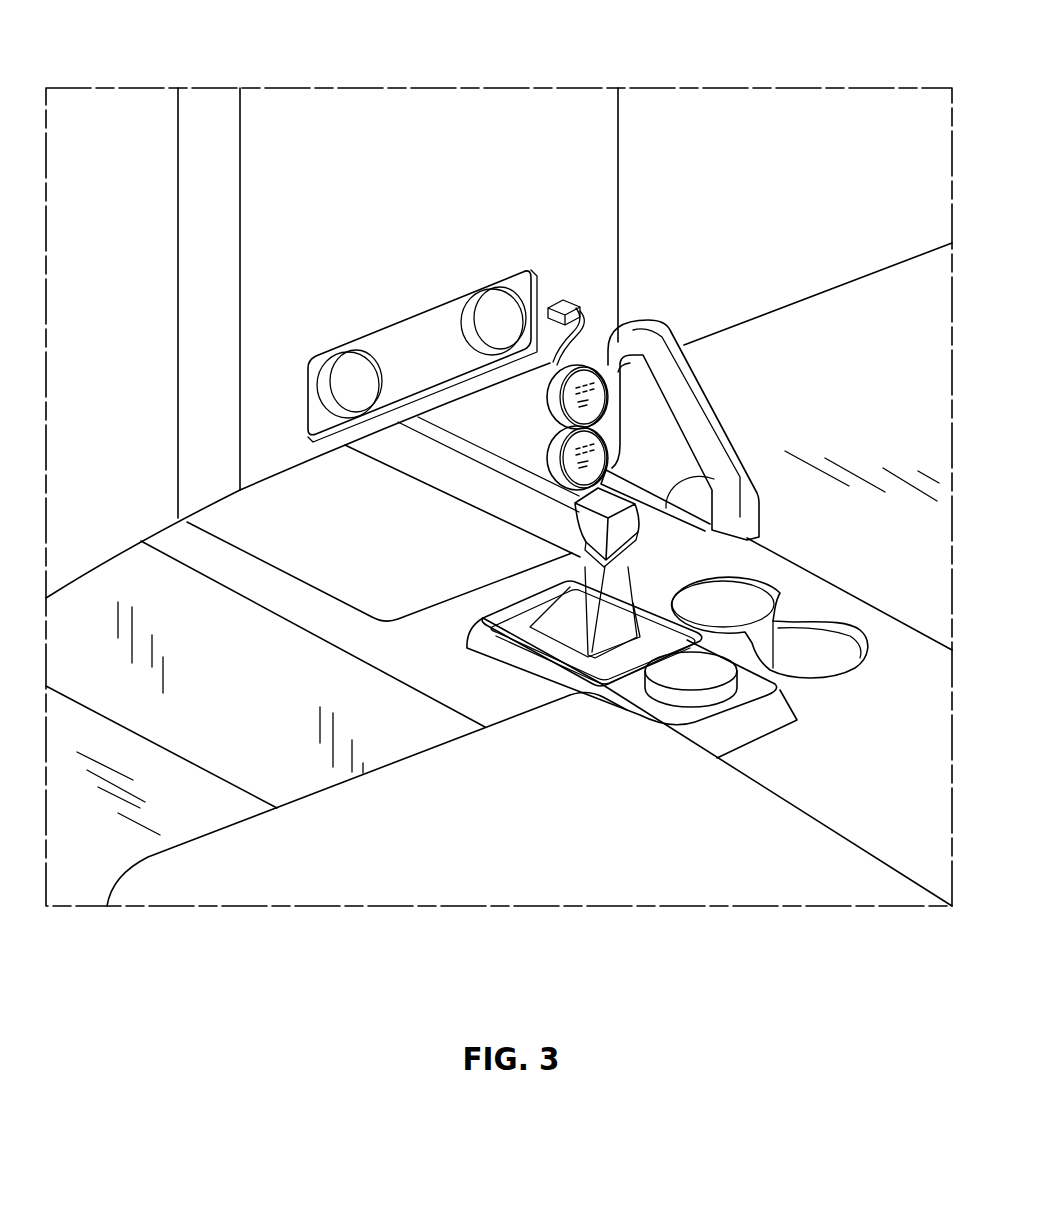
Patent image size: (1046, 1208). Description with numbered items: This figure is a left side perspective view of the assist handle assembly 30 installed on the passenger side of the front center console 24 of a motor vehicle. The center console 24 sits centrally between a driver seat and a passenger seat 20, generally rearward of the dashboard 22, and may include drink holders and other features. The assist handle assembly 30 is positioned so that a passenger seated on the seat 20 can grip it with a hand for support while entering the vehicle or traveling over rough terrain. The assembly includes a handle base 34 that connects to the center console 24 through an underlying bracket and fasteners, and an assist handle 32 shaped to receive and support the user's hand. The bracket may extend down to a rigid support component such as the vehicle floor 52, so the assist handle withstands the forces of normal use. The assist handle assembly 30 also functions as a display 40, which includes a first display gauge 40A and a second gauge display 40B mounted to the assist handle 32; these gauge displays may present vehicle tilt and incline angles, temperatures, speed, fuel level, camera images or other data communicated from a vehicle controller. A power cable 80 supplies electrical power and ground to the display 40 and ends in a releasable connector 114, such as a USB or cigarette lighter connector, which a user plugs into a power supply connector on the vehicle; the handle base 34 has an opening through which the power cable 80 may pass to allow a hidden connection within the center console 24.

The seat 20 is at (326, 864).
The dashboard 22 is at (425, 170).
The center console 24 is at (823, 602).
The assist handle assembly 30 is at (710, 379).
The assist handle 32 is at (687, 377).
The handle base 34 is at (759, 486).
The display 40 is at (519, 381).
The first display gauge 40A is at (546, 402).
The second gauge display 40B is at (551, 455).
The vehicle floor 52 is at (815, 466).
The power cable 80 is at (598, 332).
The releasable connector 114 is at (570, 298).